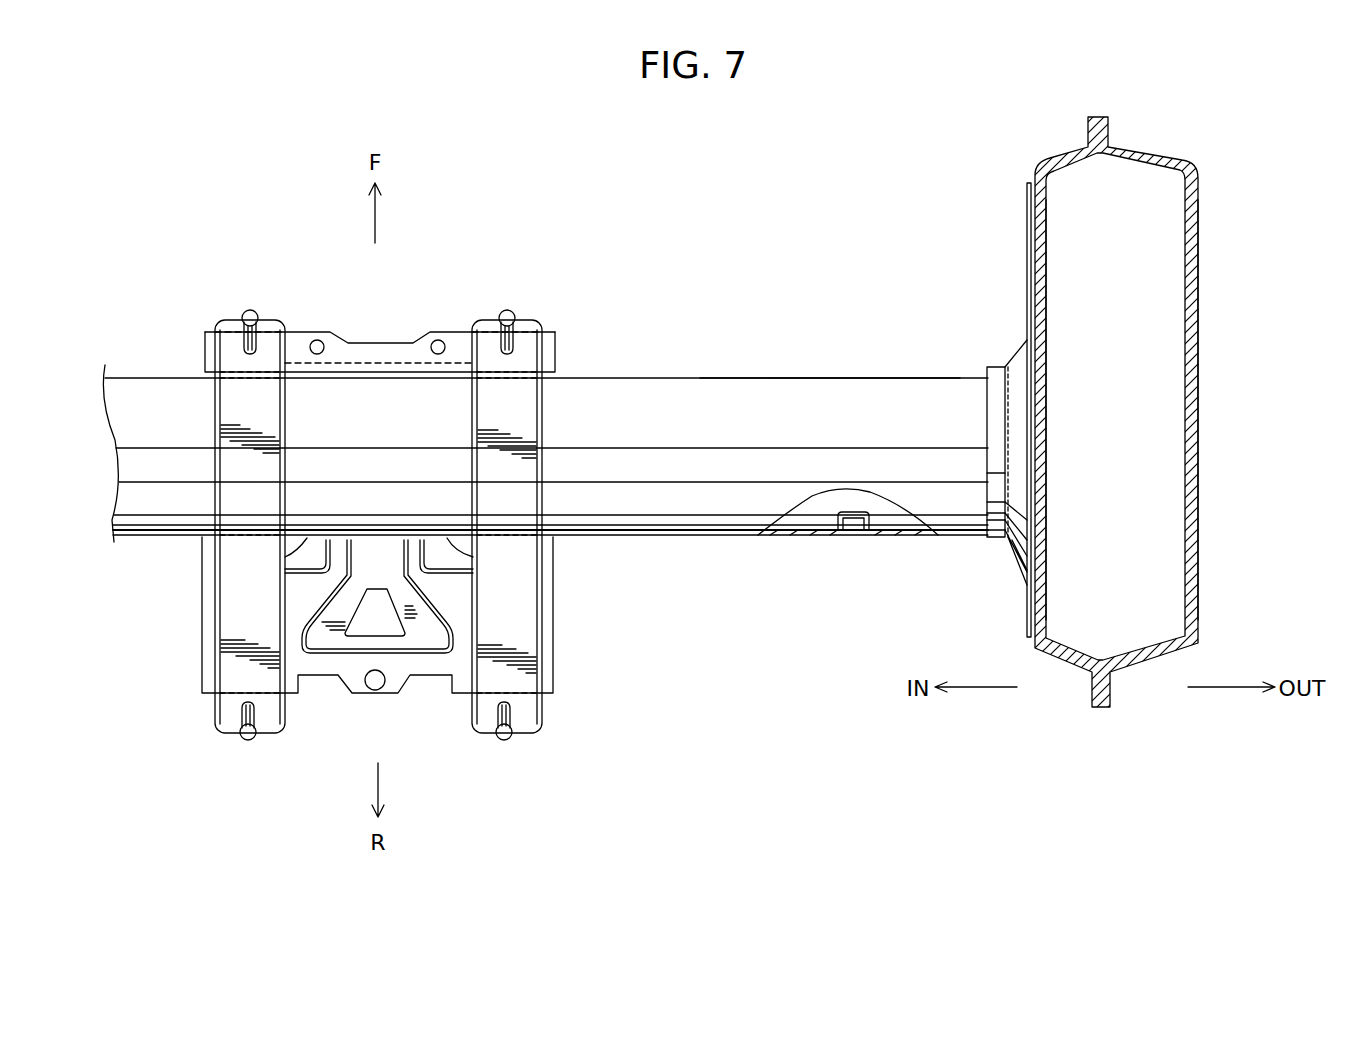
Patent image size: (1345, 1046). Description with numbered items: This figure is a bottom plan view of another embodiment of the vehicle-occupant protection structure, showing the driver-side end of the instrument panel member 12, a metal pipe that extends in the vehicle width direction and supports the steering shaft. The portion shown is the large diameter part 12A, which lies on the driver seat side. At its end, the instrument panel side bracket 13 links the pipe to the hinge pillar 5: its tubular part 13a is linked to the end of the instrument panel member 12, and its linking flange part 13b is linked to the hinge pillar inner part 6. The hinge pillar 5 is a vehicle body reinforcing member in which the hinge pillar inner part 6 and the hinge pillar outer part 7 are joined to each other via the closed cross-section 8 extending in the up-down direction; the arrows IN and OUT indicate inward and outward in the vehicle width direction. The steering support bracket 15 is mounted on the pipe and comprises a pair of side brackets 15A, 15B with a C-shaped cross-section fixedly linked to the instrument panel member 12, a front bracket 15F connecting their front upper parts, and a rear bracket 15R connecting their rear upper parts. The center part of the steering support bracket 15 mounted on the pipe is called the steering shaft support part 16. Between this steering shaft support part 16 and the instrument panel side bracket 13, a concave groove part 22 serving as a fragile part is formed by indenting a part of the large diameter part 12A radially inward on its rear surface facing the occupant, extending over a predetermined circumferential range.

The hinge pillar 5 is at (1214, 258).
The hinge pillar inner part 6 is at (1045, 330).
The hinge pillar outer part 7 is at (1198, 405).
The closed cross-section 8 is at (1102, 452).
The instrument panel member 12 is at (683, 364).
The large diameter part 12A is at (785, 377).
The instrument panel side bracket 13 is at (1013, 334).
The tubular part 13a is at (992, 410).
The linking flange part 13b is at (1027, 215).
The steering support bracket 15 is at (388, 481).
The side bracket 15A is at (519, 409).
The side bracket 15B is at (235, 407).
The front bracket 15F is at (310, 332).
The rear bracket 15R is at (427, 638).
The steering shaft support part 16 is at (397, 324).
The concave groove part 22 is at (862, 518).